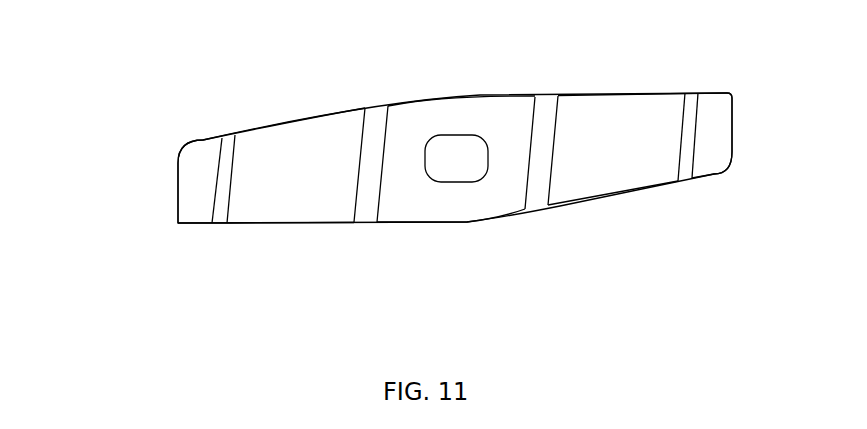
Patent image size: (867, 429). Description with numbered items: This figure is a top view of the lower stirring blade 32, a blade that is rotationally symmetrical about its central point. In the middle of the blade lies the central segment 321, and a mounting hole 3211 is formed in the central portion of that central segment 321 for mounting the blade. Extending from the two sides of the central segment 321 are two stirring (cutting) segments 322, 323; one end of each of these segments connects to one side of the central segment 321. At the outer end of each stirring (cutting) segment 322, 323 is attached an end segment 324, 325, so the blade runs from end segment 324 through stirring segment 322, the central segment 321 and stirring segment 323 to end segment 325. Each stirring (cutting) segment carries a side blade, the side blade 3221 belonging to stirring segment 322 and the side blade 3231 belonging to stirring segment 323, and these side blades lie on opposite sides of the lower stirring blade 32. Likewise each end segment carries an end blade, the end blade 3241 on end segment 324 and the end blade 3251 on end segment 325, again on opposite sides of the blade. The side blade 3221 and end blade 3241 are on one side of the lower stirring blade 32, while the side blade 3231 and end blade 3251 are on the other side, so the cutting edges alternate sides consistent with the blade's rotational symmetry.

The lower stirring blade 32 is at (165, 210).
The central segment 321 is at (447, 115).
The mounting hole 3211 is at (452, 162).
The stirring (cutting) segment 322 is at (305, 141).
The side blade 3221 is at (287, 223).
The stirring (cutting) segment 323 is at (582, 187).
The side blade 3231 is at (605, 95).
The end segment 324 is at (198, 177).
The end blade 3241 is at (197, 223).
The end segment 325 is at (713, 155).
The end blade 3251 is at (713, 93).